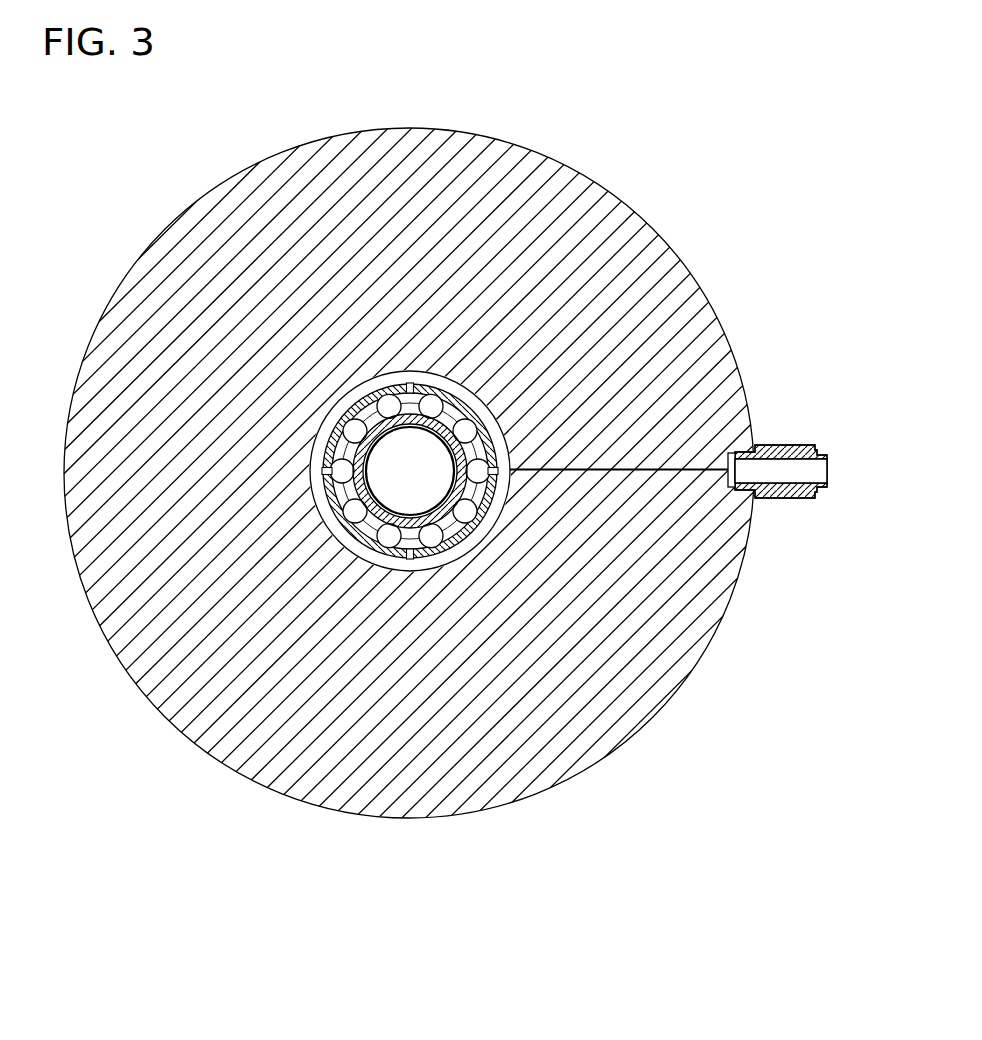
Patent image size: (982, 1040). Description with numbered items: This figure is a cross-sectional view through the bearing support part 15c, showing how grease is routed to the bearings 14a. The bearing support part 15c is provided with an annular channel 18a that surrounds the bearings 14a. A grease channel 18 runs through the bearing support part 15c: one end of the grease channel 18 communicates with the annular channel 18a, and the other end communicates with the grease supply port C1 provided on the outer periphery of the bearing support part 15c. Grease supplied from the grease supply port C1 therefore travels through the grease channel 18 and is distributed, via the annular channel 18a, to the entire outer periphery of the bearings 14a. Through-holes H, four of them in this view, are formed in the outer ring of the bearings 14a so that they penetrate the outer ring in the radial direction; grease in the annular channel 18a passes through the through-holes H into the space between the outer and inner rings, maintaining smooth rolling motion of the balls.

The bearing support part 15c is at (182, 265).
The grease channel 18 is at (610, 468).
The annular channel 18a is at (480, 537).
The bearings 14a is at (362, 551).
The through-holes H is at (409, 556).
The grease supply port C1 is at (795, 445).